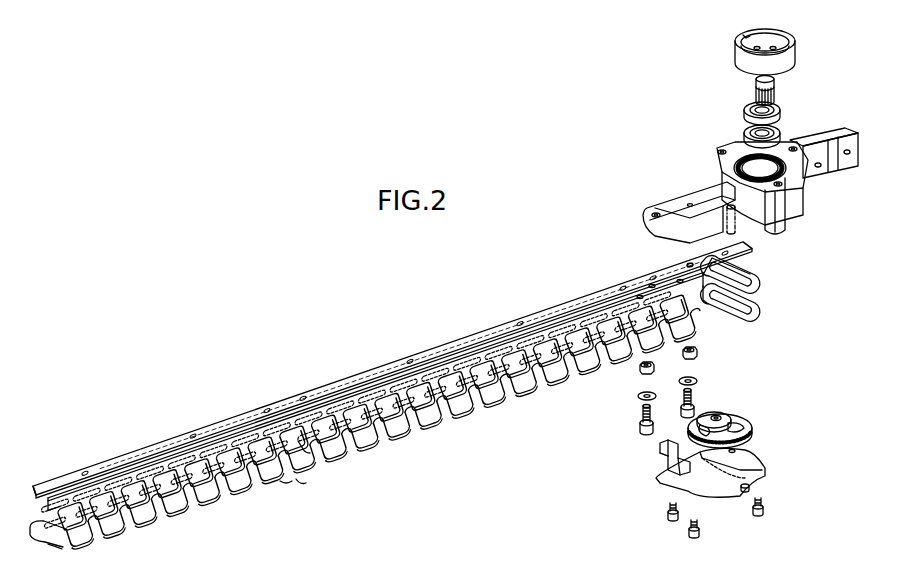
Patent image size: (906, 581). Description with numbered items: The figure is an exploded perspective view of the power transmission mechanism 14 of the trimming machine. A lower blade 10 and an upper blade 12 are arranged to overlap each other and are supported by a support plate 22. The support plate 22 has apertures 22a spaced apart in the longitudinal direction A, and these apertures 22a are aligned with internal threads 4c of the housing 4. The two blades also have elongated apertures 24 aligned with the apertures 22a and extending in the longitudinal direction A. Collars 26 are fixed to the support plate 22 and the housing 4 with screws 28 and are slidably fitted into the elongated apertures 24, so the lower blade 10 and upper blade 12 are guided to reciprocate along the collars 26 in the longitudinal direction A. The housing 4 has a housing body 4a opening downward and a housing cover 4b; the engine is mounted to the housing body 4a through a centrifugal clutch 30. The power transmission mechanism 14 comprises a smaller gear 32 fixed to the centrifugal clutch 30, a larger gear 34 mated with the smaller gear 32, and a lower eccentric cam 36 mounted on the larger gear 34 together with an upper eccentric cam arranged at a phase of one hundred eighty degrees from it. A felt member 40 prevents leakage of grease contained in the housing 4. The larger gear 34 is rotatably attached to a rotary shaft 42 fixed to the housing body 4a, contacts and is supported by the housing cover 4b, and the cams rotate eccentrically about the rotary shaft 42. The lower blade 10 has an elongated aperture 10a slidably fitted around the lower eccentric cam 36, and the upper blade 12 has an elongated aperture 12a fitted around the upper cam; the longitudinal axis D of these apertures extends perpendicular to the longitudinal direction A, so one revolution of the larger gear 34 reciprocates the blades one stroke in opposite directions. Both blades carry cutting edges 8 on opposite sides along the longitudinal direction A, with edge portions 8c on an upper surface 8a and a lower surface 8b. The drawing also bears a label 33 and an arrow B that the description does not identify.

The housing 4 is at (697, 167).
The housing body 4a is at (783, 211).
The housing cover 4b is at (748, 480).
The internal threads 4c is at (697, 204).
The cutting edges 8 is at (300, 479).
The upper surface 8a is at (287, 473).
The lower surface 8b is at (307, 457).
The edge portions 8c is at (325, 479).
The lower blade 10 is at (456, 421).
The elongated aperture 10a is at (724, 315).
The upper blade 12 is at (462, 356).
The elongated aperture 12a is at (756, 271).
The power transmission mechanism 14 is at (804, 325).
The support plate 22 is at (388, 362).
The apertures 22a is at (690, 261).
The elongated apertures 24 is at (680, 282).
The collars 26 is at (657, 369).
The screws 28 is at (687, 401).
The centrifugal clutch 30 is at (736, 56).
The smaller gear 32 is at (756, 93).
The pin 33 is at (719, 411).
The larger gear 34 is at (753, 431).
The lower eccentric cam 36 is at (740, 421).
The felt member 40 is at (658, 459).
The rotary shaft 42 is at (757, 237).
The longitudinal direction A is at (265, 384).
The assembly direction B is at (835, 233).
The longitudinal axis D is at (758, 317).